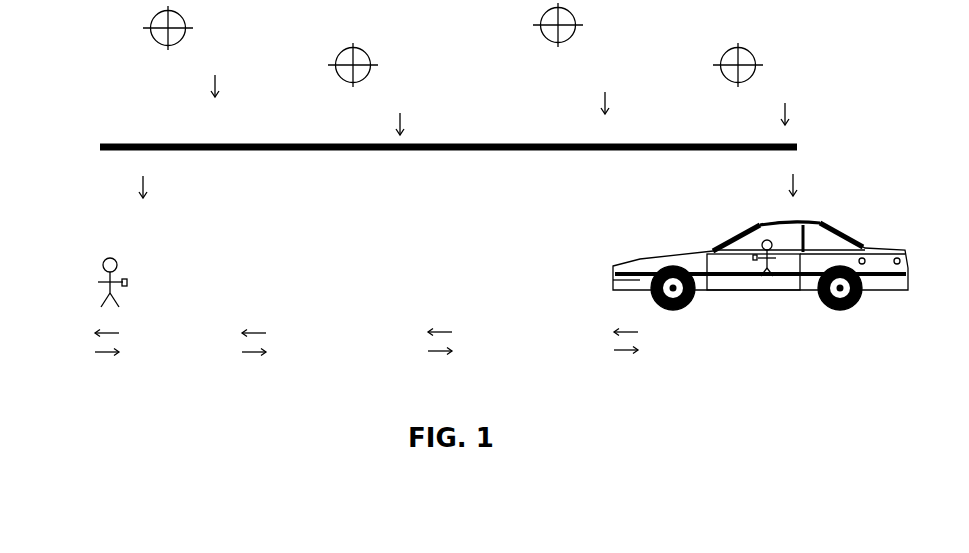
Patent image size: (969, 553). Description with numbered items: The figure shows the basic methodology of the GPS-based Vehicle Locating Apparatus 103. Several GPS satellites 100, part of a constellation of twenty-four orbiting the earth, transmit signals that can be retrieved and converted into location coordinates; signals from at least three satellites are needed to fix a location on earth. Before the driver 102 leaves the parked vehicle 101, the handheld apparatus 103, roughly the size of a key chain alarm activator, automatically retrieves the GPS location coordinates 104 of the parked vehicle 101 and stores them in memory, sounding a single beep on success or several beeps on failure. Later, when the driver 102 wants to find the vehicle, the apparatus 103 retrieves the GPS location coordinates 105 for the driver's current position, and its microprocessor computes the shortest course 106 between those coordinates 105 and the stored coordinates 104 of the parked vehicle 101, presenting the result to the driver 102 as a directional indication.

The GPS satellite 100 is at (196, 30).
The parked vehicle 101 is at (608, 280).
The driver 102 is at (118, 299).
The Vehicle Locating Apparatus 103 is at (138, 279).
The GPS location coordinates for the parked vehicle 104 is at (795, 178).
The GPS location coordinates for the driver 105 is at (143, 177).
The shortest course 106 is at (95, 351).